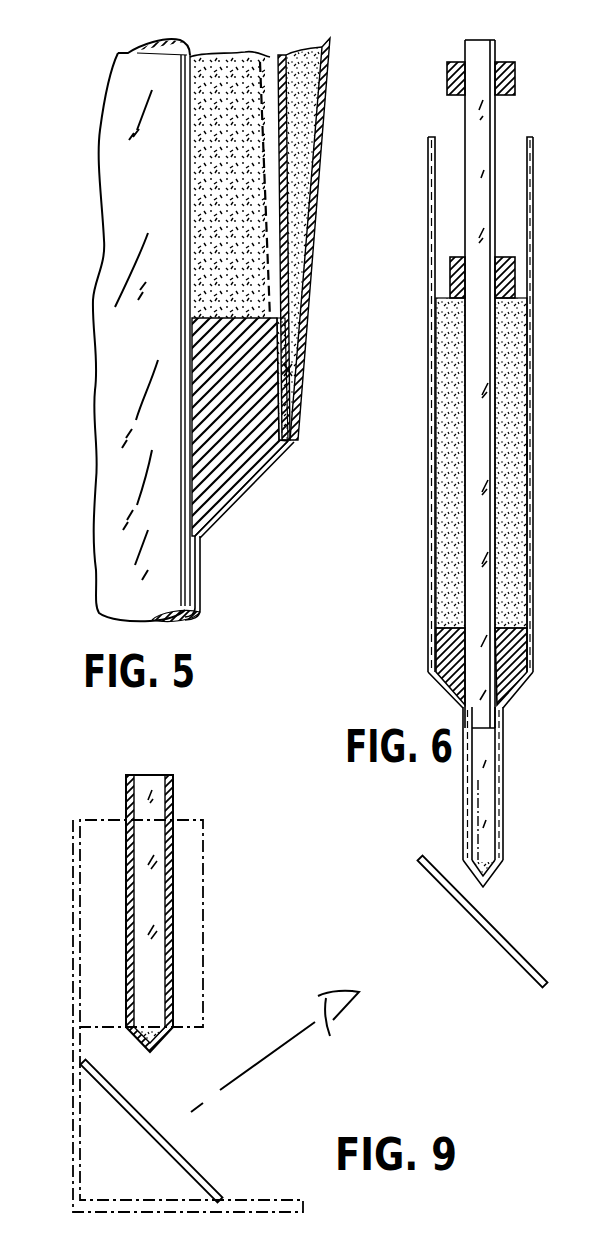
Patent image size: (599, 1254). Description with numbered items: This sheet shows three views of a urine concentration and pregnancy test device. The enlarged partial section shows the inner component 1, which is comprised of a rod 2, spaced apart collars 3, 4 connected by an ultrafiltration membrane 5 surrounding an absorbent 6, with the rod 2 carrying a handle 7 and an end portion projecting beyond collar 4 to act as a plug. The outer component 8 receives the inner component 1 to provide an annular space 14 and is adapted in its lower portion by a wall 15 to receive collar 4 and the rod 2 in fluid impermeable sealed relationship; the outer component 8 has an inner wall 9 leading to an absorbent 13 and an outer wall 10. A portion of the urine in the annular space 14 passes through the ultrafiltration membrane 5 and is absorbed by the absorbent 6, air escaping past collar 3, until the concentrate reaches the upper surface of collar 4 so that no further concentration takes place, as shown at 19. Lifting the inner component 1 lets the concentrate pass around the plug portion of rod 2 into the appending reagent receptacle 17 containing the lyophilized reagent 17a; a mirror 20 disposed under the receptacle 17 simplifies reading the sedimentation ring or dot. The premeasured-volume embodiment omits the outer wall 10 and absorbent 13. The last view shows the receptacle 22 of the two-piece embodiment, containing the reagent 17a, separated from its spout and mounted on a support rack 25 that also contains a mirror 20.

In FIG. 6, the inner component 1 is at (517, 106).
In FIG. 5, the rod 2 is at (127, 73).
In FIG. 6, the rod 2 is at (473, 167).
In FIG. 6, the collar 3 is at (462, 257).
In FIG. 5, the collar 4 is at (256, 469).
In FIG. 6, the collar 4 is at (515, 652).
In FIG. 5, the ultrafiltration membrane 5 is at (262, 70).
In FIG. 6, the ultrafiltration membrane 5 is at (517, 316).
In FIG. 5, the absorbent 6 is at (223, 67).
In FIG. 6, the absorbent 6 is at (450, 323).
In FIG. 6, the handle 7 is at (447, 75).
In FIG. 6, the outer component 8 is at (380, 367).
In FIG. 6, the inner wall 9 is at (531, 219).
In FIG. 5, the outer wall 10 is at (320, 163).
In FIG. 5, the absorbent 13 is at (305, 123).
In FIG. 5, the annular space 14 is at (273, 222).
In FIG. 6, the annular space 14 is at (528, 455).
In FIG. 5, the wall 15 is at (218, 527).
In FIG. 6, the wall 15 is at (518, 692).
In FIG. 6, the reagent receptacle 17 is at (505, 790).
In FIG. 6, the reagent 17a is at (503, 858).
In FIG. 5, the concentration stop point 19 is at (283, 368).
In FIG. 6, the mirror 20 is at (508, 944).
In FIG. 9, the mirror 20 is at (190, 1161).
In FIG. 9, the receptacle 22 is at (173, 790).
In FIG. 9, the support rack 25 is at (70, 1027).